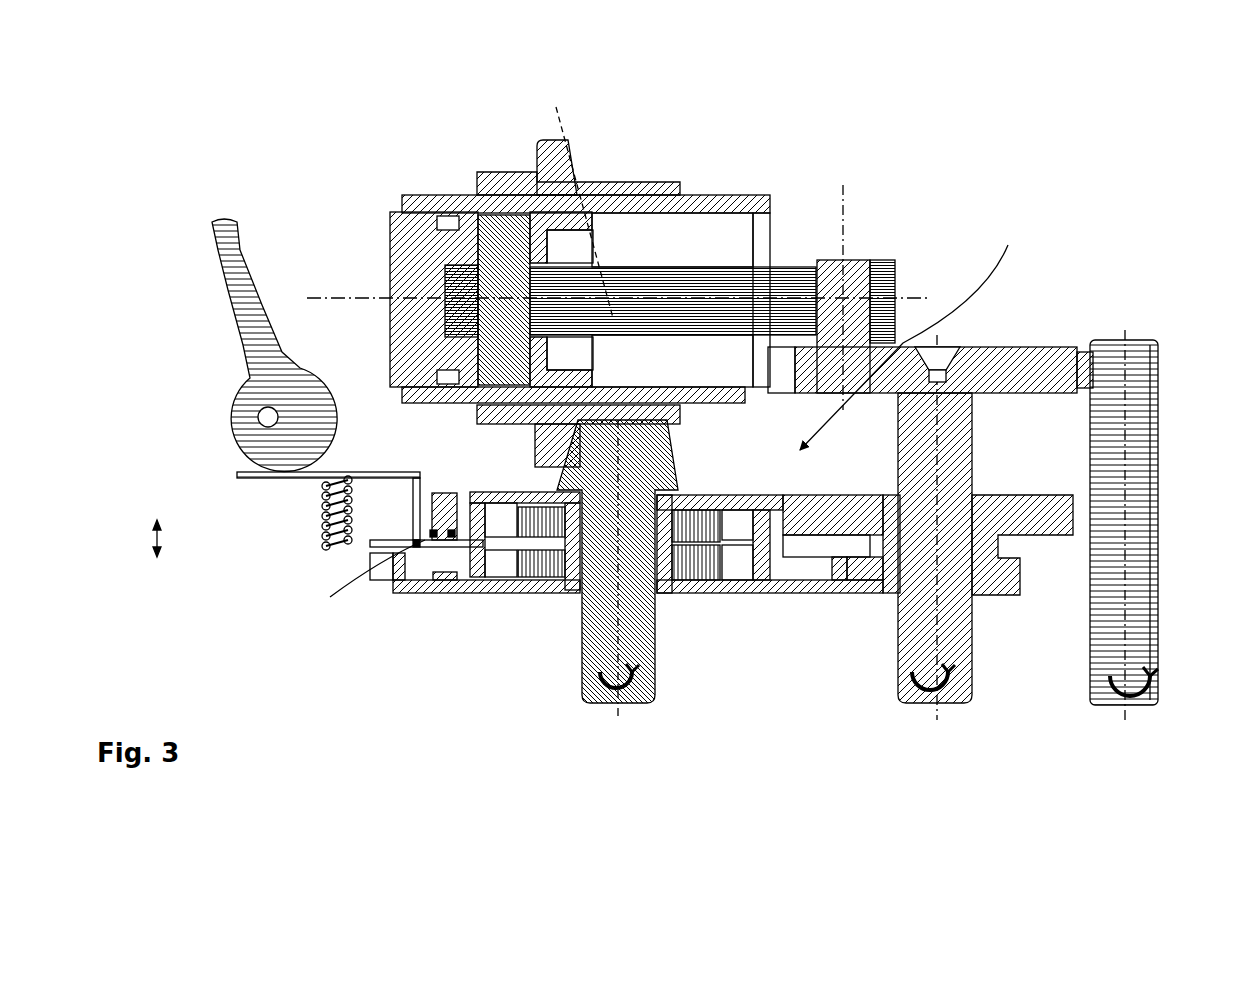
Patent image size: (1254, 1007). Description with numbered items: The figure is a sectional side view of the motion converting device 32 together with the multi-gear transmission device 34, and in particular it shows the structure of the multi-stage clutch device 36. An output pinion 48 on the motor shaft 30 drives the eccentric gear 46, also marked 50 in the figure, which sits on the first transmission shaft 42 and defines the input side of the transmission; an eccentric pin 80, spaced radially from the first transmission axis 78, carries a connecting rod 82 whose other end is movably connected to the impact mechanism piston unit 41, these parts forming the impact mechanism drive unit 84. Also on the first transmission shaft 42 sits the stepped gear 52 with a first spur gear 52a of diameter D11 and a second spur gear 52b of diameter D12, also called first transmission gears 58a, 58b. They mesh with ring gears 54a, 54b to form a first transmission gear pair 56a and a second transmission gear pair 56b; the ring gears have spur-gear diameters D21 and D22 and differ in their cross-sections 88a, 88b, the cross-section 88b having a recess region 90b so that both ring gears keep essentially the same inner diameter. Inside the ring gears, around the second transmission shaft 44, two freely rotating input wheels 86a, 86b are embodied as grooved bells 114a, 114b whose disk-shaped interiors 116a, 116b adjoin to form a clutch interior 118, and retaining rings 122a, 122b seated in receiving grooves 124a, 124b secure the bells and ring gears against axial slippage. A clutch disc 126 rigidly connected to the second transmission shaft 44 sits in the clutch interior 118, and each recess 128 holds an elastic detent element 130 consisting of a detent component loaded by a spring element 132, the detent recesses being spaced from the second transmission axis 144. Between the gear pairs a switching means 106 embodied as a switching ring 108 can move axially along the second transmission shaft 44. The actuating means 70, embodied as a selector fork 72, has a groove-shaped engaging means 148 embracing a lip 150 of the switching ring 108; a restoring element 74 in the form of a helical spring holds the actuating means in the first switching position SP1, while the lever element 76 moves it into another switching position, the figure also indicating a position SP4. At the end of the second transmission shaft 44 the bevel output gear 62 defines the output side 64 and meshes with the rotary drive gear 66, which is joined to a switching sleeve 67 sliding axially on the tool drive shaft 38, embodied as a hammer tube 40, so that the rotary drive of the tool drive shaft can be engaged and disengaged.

The motor shaft 30 is at (1161, 519).
The motion converting device 32 is at (950, 192).
The multi-gear transmission device 34 is at (915, 336).
The multi-stage clutch device 36 is at (569, 585).
The tool drive shaft 38 is at (586, 279).
The hammer tube 40 is at (695, 210).
The impact mechanism piston unit 41 is at (418, 240).
The first transmission shaft 42 is at (915, 650).
The second transmission shaft 44 is at (620, 580).
The eccentric gear 46 is at (953, 342).
The output pinion 48 is at (1158, 382).
The hub 50 is at (1022, 357).
The stepped gear 52 is at (1024, 584).
The first spur gear 52a is at (1024, 514).
The second spur gear 52b is at (844, 609).
The ring gear 54a is at (437, 512).
The ring gear 54b is at (425, 585).
The first transmission gear pair 56a is at (765, 560).
The second transmission gear pair 56b is at (838, 586).
The first transmission gear 58a is at (1020, 515).
The first transmission gear 58b is at (865, 588).
The output gear 62 is at (647, 561).
The output side 64 is at (650, 447).
The rotary drive gear 66 is at (545, 150).
The switching sleeve 67 is at (625, 188).
The actuating means 70 is at (303, 510).
The selector fork 72 is at (248, 478).
The restoring element 74 is at (323, 500).
The lever element 76 is at (235, 222).
The first transmission axis 78 is at (932, 706).
The eccentric pin 80 is at (846, 268).
The connecting rod 82 is at (753, 288).
The impact mechanism drive unit 84 is at (830, 193).
The input wheel 86a is at (724, 516).
The input wheel 86b is at (521, 578).
The cross-section 88a is at (792, 520).
The cross-section 88b is at (800, 586).
The recess region 90b is at (802, 586).
The switching means 106 is at (368, 593).
The switching ring 108 is at (452, 534).
The grooved bell 114a is at (728, 522).
The grooved bell 114b is at (502, 563).
The disk-shaped interior 116a is at (513, 518).
The disk-shaped interior 116b is at (470, 596).
The clutch interior 118 is at (790, 495).
The retaining ring 122a is at (468, 492).
The retaining ring 122b is at (463, 592).
The receiving groove 124a is at (475, 485).
The receiving groove 124b is at (463, 600).
The clutch disc 126 is at (665, 550).
The recess 128 is at (683, 586).
The elastic detent element 130 is at (560, 570).
The spring element 132 is at (553, 560).
The second transmission axis 144 is at (616, 717).
The engaging means 148 is at (433, 534).
The lip 150 is at (417, 543).
The first switching position SP1 is at (200, 504).
The position SP4 is at (200, 570).
The diameter of first spur gear D11 is at (1077, 97).
The diameter of second spur gear D12 is at (1025, 97).
The diameter of ring gear 54a spur gear D21 is at (430, 732).
The diameter of ring gear 54b spur gear D22 is at (392, 730).